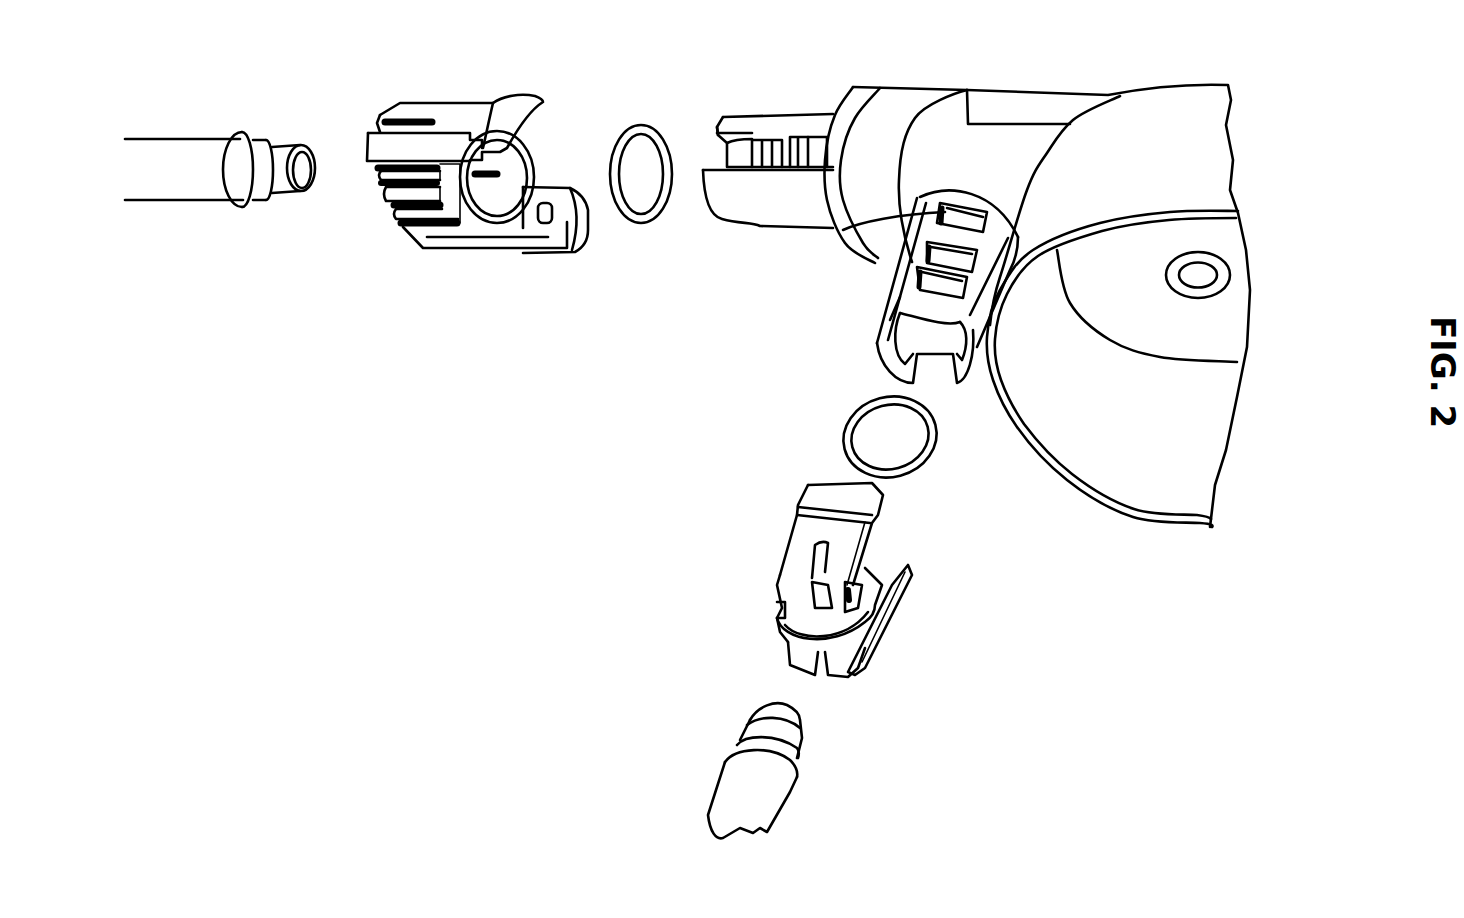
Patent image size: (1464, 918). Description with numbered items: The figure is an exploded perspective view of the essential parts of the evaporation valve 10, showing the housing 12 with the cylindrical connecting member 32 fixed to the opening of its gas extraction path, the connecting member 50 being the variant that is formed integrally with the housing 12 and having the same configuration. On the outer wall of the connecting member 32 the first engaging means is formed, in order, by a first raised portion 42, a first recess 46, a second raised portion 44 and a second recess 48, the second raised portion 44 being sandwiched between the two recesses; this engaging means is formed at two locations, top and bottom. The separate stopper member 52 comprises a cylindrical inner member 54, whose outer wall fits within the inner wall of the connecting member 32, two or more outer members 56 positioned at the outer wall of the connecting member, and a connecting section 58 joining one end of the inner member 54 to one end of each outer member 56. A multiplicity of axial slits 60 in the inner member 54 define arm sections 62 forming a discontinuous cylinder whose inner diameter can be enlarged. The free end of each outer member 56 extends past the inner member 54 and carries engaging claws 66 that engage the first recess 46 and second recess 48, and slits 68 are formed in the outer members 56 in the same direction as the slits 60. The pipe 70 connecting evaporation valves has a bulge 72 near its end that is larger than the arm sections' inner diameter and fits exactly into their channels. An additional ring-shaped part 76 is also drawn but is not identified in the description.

The evaporation valve 10 is at (1109, 270).
The housing 12 is at (1100, 153).
The cylindrical connecting member 32 is at (846, 247).
The first raised portion 42 is at (753, 140).
The second raised portion 44 is at (790, 147).
The first recess 46 is at (769, 140).
The second recess 48 is at (813, 150).
The connecting member 50 is at (937, 375).
The stopper member 52 is at (628, 361).
The inner member 54 is at (457, 213).
The outer member 56 is at (462, 115).
The connecting section 58 is at (376, 170).
The slits 60 is at (391, 190).
The arm sections 62 is at (381, 186).
The engaging claws 66 is at (547, 209).
The slits 68 is at (407, 128).
The pipe 70 is at (463, 454).
The bulge 72 is at (246, 134).
The O-ring seal 76 is at (641, 125).